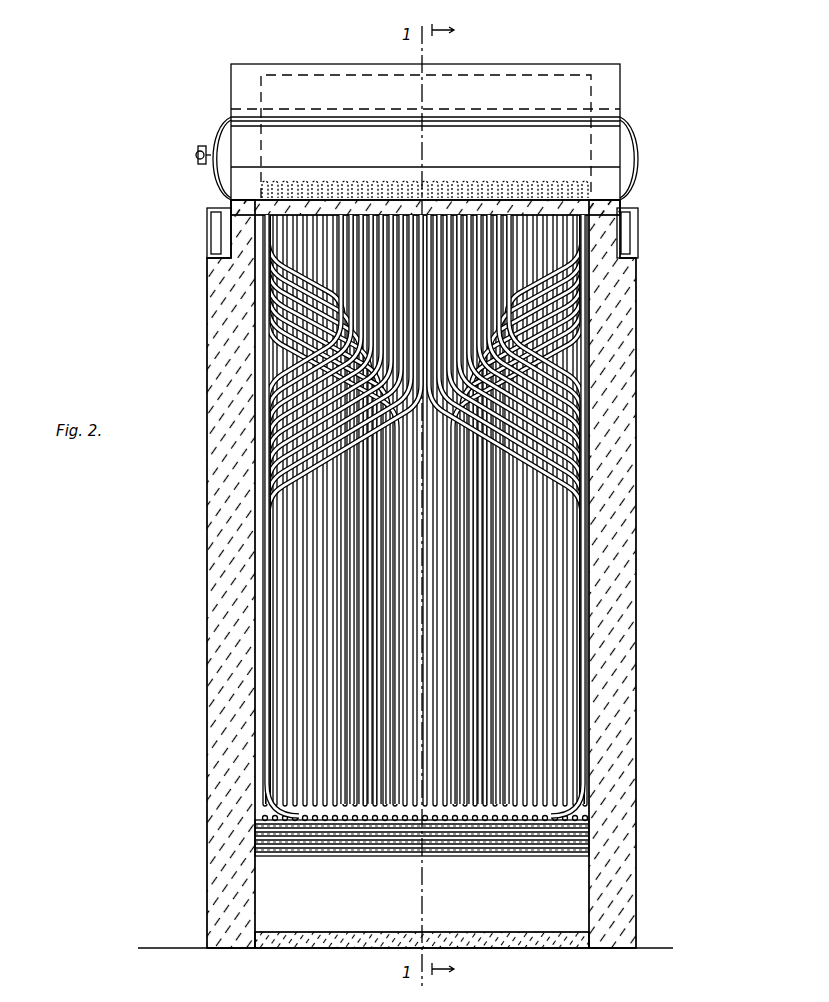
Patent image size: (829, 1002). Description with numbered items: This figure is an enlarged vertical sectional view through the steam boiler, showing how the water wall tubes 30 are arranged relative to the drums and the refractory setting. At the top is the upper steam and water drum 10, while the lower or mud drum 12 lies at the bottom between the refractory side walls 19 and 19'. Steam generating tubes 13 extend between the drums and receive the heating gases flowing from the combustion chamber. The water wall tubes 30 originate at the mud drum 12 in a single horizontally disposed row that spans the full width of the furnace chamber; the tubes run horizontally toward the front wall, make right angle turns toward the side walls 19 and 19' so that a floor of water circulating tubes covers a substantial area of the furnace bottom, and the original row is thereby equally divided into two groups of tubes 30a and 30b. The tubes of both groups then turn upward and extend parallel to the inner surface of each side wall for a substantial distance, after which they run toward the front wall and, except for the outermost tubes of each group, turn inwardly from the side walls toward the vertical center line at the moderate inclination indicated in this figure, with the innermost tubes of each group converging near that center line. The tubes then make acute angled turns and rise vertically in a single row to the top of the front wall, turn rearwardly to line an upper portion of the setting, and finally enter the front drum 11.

The upper steam and water drum 10 is at (615, 107).
The front drum 11 is at (220, 110).
The lower or mud drum 12 is at (326, 836).
The steam generating tubes 13 is at (283, 744).
The side wall 19 is at (200, 574).
The side wall 19' is at (637, 574).
The water wall tubes 30 is at (533, 222).
The group of tubes 30a is at (257, 492).
The group of tubes 30b is at (573, 500).